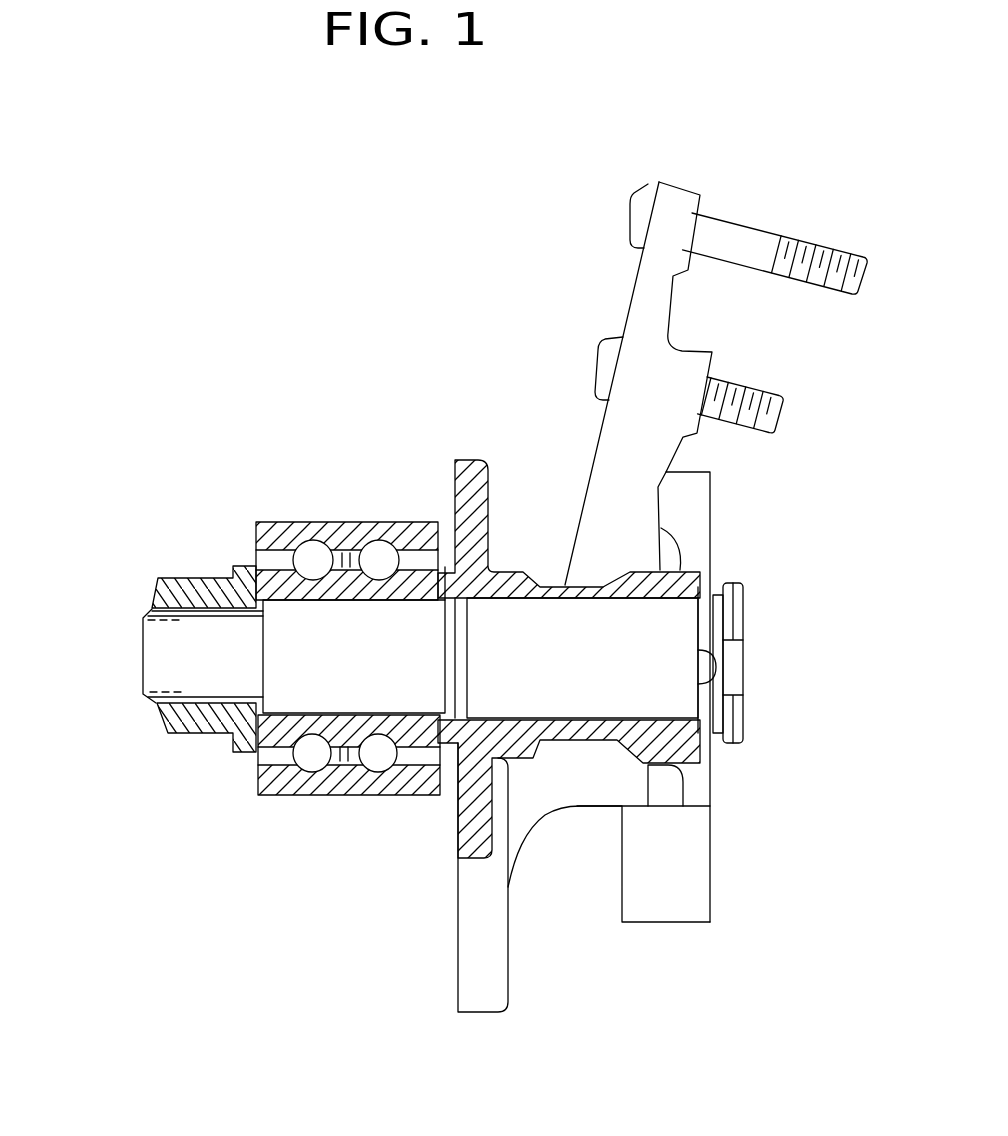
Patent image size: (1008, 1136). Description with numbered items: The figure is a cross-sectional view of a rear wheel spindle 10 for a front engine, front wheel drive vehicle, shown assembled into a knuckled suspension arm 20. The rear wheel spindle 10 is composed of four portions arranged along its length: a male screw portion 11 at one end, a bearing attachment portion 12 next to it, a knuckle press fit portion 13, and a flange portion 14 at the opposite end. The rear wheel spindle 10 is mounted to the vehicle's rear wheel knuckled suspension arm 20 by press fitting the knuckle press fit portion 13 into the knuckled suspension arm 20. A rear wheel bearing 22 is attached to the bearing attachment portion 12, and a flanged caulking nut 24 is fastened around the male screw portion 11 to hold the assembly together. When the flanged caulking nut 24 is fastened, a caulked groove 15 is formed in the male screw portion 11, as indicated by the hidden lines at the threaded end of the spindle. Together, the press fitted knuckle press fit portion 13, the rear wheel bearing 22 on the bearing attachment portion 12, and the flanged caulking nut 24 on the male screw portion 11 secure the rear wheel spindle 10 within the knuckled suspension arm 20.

The rear wheel spindle 10 is at (763, 678).
The male screw portion 11 is at (200, 673).
The bearing attachment portion 12 is at (360, 690).
The knuckle press fit portion 13 is at (597, 700).
The flange portion 14 is at (735, 604).
The caulked groove 15 is at (150, 614).
The knuckled suspension arm 20 is at (648, 350).
The rear wheel bearing 22 is at (303, 528).
The flanged caulking nut 24 is at (199, 600).